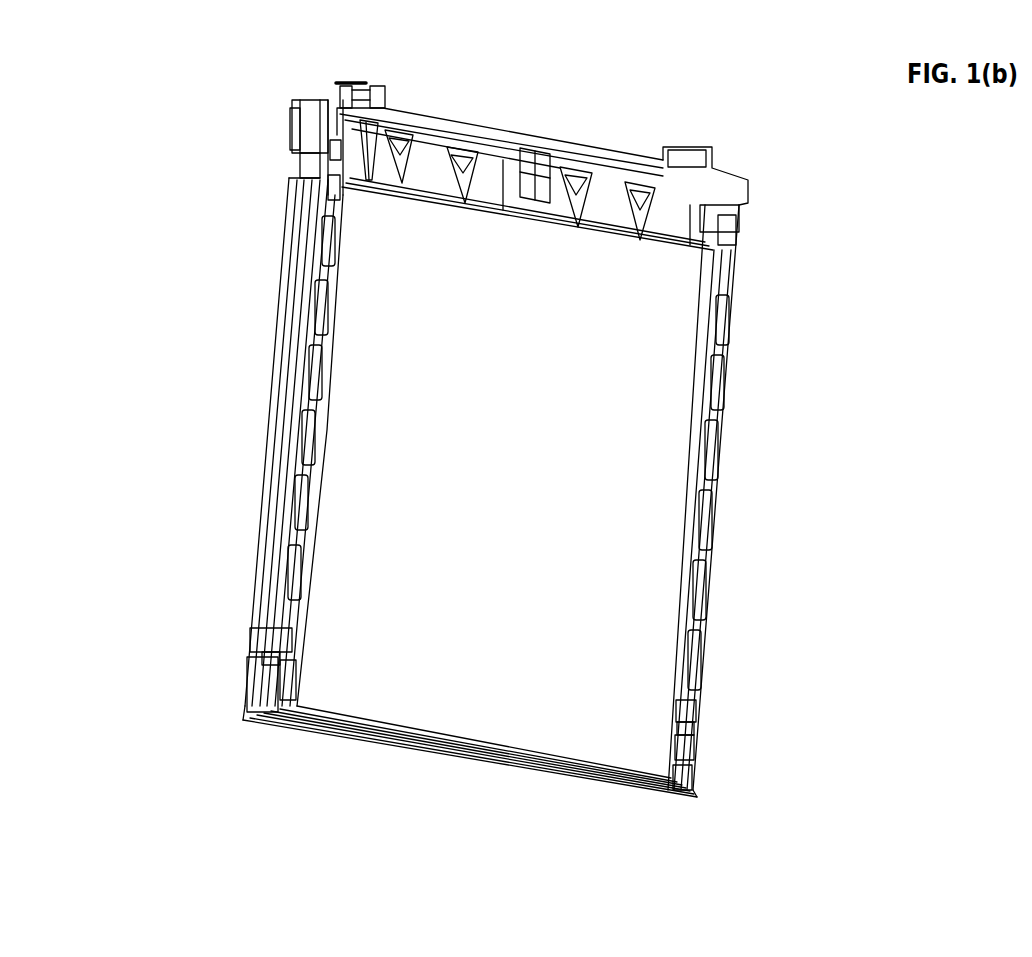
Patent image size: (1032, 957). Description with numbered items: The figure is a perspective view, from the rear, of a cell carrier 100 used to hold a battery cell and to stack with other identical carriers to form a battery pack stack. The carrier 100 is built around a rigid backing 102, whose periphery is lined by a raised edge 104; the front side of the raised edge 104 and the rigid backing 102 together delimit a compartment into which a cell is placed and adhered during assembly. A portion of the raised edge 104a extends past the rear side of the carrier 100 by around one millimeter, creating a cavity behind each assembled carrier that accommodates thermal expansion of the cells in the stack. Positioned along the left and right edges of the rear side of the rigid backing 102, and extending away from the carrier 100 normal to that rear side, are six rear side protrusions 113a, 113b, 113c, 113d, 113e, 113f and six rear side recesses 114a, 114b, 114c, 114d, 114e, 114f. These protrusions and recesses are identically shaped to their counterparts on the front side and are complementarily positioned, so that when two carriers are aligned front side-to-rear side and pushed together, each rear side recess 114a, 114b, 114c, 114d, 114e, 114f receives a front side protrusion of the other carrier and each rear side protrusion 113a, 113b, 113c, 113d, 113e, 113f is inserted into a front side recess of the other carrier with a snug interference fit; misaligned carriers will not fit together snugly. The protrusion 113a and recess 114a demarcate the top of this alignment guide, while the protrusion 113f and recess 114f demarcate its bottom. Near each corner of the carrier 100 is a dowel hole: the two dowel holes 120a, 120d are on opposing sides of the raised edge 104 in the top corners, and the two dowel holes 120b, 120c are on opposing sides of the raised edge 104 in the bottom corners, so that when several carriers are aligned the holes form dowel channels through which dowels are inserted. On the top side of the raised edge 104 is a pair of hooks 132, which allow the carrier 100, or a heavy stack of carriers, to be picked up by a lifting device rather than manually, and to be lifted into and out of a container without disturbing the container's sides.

The cell carrier 100 is at (420, 446).
The rigid backing 102 is at (425, 627).
The raised edge 104 is at (263, 690).
The portion of the raised edge 104a is at (672, 650).
The rear side protrusion 113a is at (337, 229).
The rear side protrusion 113b is at (313, 373).
The rear side protrusion 113c is at (300, 503).
The rear side protrusion 113d is at (717, 385).
The rear side protrusion 113e is at (705, 522).
The rear side protrusion 113f is at (697, 655).
The rear side recess 114a is at (720, 325).
The rear side recess 114b is at (709, 458).
The rear side recess 114c is at (700, 588).
The rear side recess 114d is at (323, 306).
The rear side recess 114e is at (306, 436).
The rear side recess 114f is at (294, 578).
The dowel hole 120a is at (278, 160).
The dowel hole 120b is at (240, 648).
The dowel hole 120c is at (698, 730).
The dowel hole 120d is at (748, 247).
The hook 132 is at (349, 82).